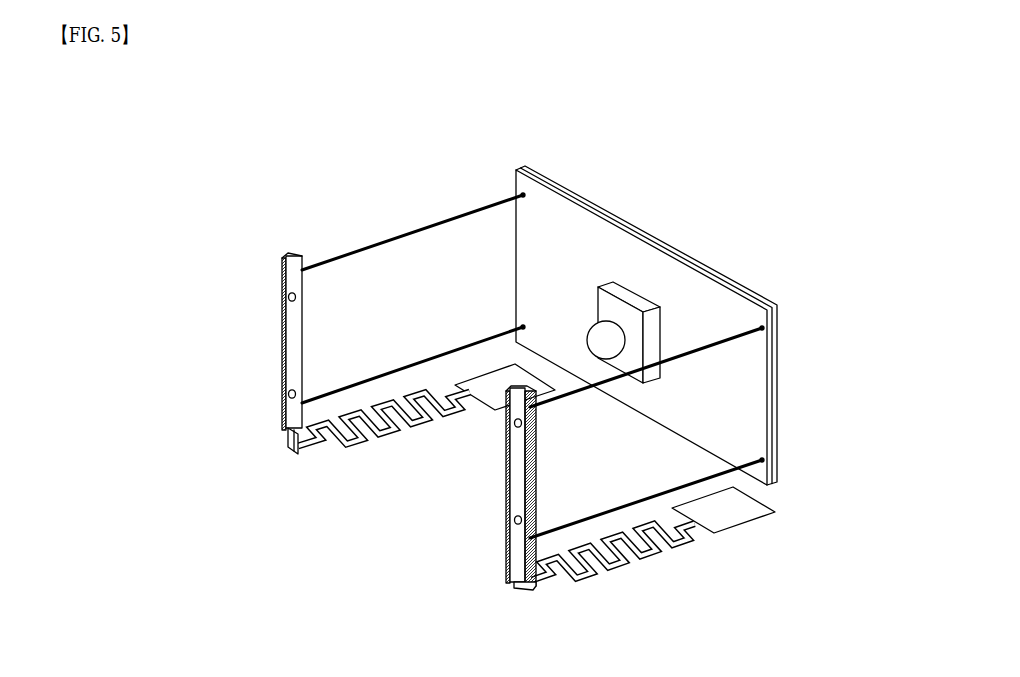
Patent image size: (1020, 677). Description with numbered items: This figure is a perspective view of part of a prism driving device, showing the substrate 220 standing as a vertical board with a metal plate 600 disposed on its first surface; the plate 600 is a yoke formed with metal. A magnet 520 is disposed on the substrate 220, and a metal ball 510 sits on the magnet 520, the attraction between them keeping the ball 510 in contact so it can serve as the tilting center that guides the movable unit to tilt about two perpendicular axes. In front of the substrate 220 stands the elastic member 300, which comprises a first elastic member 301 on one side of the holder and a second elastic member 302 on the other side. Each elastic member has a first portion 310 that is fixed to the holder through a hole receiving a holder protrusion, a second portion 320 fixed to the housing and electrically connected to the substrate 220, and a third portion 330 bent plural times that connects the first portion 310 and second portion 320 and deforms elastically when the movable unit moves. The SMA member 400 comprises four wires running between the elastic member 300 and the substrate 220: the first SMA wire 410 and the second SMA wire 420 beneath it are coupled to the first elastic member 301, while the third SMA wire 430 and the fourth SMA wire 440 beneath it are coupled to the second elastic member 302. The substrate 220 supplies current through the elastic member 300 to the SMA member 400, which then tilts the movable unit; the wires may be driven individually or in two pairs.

The substrate 220 is at (693, 312).
The elastic member 300 is at (628, 574).
The first elastic member 301 is at (226, 353).
The second elastic member 302 is at (504, 570).
The first portion 310 is at (283, 367).
The second portion 320 is at (487, 380).
The third portion 330 is at (342, 456).
The SMA member 400 is at (533, 322).
The first SMA wire 410 is at (367, 247).
The second SMA wire 420 is at (388, 373).
The third SMA wire 430 is at (572, 393).
The fourth SMA wire 440 is at (670, 488).
The ball 510 is at (607, 332).
The magnet 520 is at (638, 298).
The plate 600 is at (710, 303).